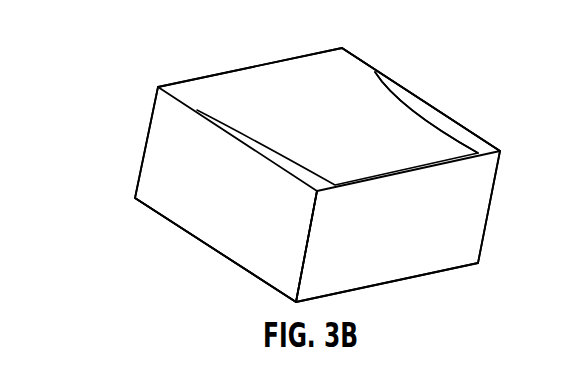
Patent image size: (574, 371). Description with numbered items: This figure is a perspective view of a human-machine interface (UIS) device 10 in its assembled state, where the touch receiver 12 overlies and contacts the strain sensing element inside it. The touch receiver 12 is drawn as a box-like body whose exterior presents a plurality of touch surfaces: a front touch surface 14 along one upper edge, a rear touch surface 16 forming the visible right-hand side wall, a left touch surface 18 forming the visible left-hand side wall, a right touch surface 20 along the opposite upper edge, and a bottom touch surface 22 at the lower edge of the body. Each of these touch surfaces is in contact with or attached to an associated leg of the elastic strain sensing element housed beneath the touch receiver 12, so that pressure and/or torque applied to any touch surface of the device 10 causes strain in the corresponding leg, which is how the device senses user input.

The human-machine interface (UIS) device 10 is at (122, 44).
The touch receiver 12 is at (357, 77).
The front touch surface 14 is at (233, 70).
The rear touch surface 16 is at (470, 212).
The left touch surface 18 is at (190, 217).
The right touch surface 20 is at (447, 115).
The bottom touch surface 22 is at (240, 267).